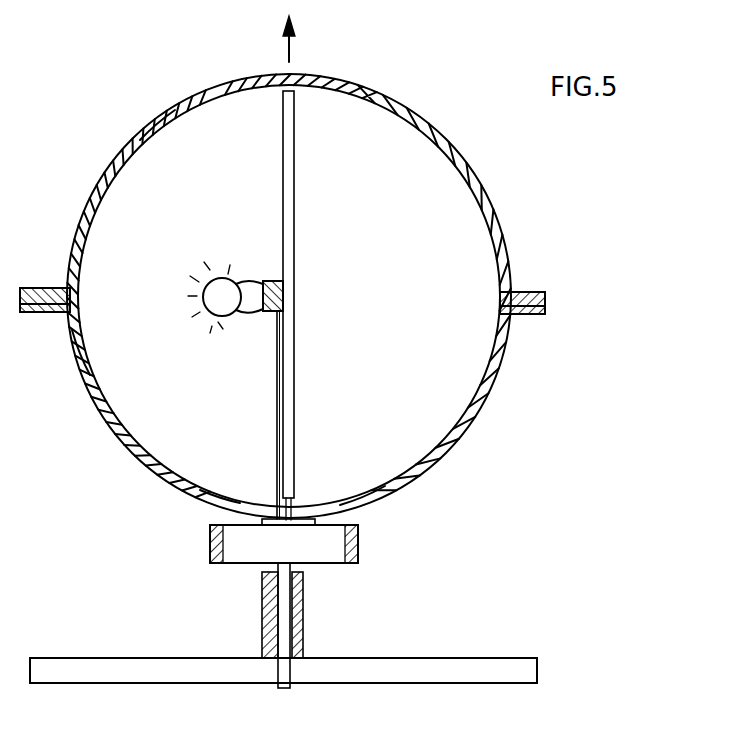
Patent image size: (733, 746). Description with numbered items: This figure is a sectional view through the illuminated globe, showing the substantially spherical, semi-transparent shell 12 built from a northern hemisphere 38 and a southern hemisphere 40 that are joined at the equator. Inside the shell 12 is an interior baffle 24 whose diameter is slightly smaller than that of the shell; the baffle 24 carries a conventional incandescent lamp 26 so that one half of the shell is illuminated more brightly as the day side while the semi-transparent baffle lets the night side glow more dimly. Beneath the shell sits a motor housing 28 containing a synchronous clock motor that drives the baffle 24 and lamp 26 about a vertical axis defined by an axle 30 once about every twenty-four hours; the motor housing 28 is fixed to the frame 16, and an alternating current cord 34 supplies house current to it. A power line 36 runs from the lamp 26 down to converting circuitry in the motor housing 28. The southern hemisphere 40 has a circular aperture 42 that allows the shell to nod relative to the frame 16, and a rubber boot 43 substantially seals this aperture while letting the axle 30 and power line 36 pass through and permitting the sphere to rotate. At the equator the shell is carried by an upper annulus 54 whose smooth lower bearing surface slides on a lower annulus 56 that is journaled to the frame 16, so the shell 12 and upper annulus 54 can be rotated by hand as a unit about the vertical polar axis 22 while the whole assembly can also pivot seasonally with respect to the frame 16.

The shell 12 is at (470, 176).
The frame 16 is at (493, 676).
The polar axis 22 is at (291, 50).
The interior baffle 24 is at (296, 184).
The lamp 26 is at (232, 275).
The motor housing 28 is at (358, 540).
The axle 30 is at (298, 503).
The alternating current cord 34 is at (292, 618).
The power line 36 is at (277, 362).
The northern hemisphere 38 is at (156, 124).
The southern hemisphere 40 is at (87, 348).
The circular aperture 42 is at (358, 500).
The rubber boot 43 is at (205, 503).
The upper annulus 54 is at (540, 292).
The lower annulus 56 is at (522, 315).